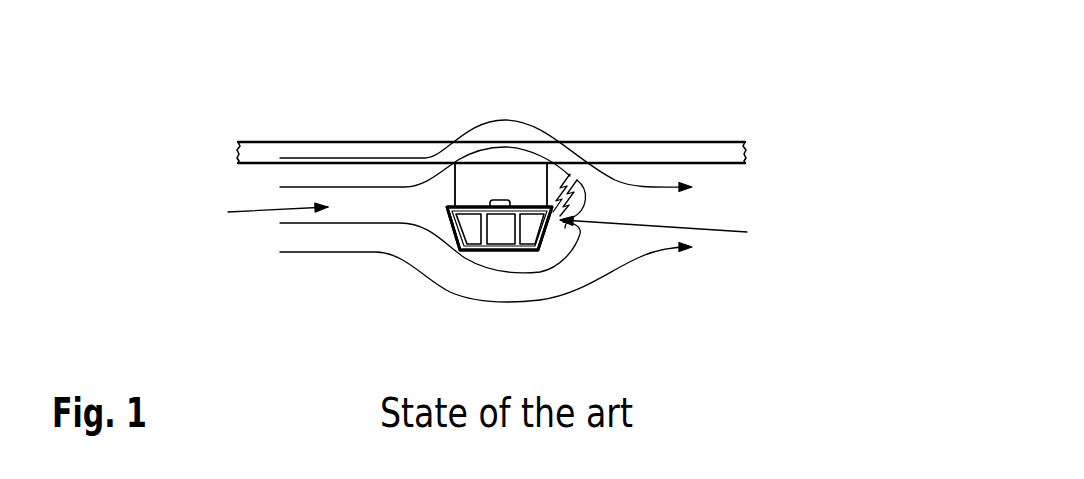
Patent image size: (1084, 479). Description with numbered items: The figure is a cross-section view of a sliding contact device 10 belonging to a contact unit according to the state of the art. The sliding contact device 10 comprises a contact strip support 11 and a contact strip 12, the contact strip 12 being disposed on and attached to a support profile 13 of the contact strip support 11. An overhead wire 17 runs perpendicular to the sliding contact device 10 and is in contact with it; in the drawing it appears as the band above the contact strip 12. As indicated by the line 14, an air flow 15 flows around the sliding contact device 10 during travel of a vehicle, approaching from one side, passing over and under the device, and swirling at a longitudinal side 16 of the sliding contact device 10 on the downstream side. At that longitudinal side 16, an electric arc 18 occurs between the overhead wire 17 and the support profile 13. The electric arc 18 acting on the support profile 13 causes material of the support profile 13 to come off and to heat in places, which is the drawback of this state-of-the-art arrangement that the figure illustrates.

The sliding contact device 10 is at (416, 128).
The contact strip support 11 is at (433, 200).
The contact strip 12 is at (537, 177).
The support profile 13 is at (508, 248).
The line 14 is at (502, 147).
The air flow 15 is at (438, 250).
The longitudinal side 16 is at (673, 233).
The overhead wire 17 is at (625, 153).
The electric arc 18 is at (582, 190).